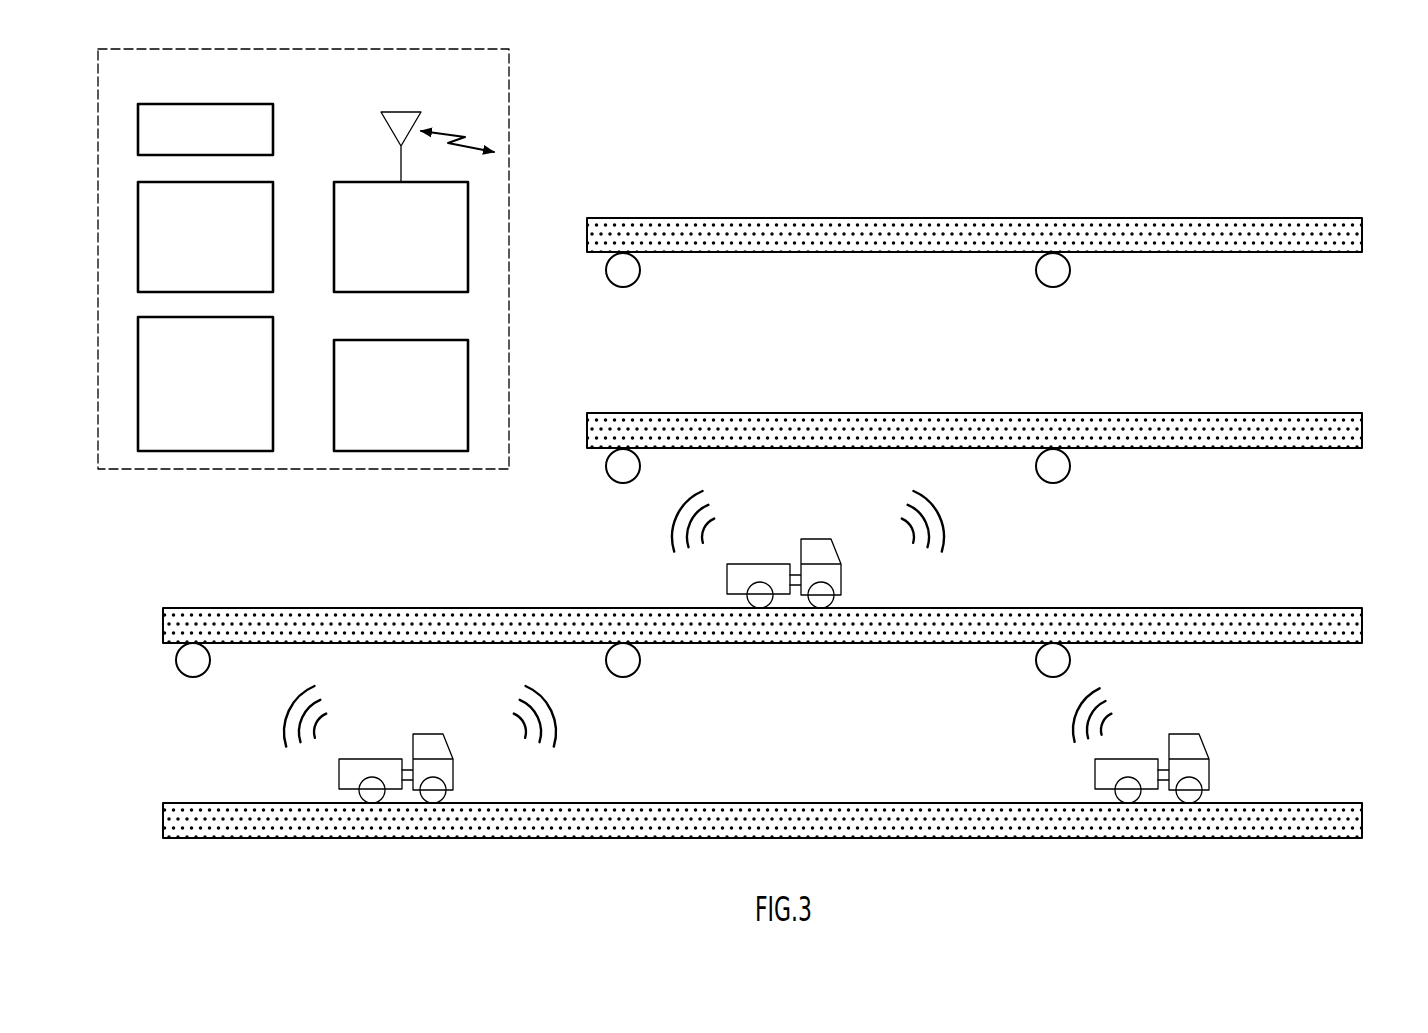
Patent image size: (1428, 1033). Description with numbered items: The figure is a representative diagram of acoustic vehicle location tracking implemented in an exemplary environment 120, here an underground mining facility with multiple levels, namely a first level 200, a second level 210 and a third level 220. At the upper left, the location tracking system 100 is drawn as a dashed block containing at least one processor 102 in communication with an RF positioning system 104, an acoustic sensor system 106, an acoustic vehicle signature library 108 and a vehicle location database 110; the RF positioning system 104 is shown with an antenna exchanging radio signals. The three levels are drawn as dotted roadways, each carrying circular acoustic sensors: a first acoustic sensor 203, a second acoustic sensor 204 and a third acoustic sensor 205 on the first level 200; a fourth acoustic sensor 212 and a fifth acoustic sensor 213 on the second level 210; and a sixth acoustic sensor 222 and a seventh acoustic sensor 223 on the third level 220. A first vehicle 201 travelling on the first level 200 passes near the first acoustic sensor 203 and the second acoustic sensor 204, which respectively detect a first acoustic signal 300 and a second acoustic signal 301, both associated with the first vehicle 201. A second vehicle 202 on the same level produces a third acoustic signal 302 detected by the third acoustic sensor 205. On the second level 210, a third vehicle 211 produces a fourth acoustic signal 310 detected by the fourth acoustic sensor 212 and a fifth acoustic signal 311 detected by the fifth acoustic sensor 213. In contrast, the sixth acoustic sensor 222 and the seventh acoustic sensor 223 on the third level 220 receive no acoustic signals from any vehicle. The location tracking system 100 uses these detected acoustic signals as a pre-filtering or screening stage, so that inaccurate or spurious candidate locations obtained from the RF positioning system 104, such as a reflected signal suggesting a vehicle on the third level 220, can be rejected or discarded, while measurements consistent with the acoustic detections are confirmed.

The location tracking system 100 is at (433, 49).
The processor 102 is at (273, 142).
The RF positioning system 104 is at (415, 292).
The acoustic sensor system 106 is at (273, 230).
The acoustic vehicle signature library 108 is at (273, 382).
The vehicle location database 110 is at (334, 412).
The environment 120 is at (1169, 129).
The first level 200 is at (1347, 750).
The first vehicle 201 is at (453, 777).
The second vehicle 202 is at (1210, 777).
The first acoustic sensor 203 is at (193, 677).
The second acoustic sensor 204 is at (623, 677).
The third acoustic sensor 205 is at (1053, 677).
The second level 210 is at (1347, 555).
The third vehicle 211 is at (843, 580).
The fourth acoustic sensor 212 is at (623, 483).
The fifth acoustic sensor 213 is at (1053, 483).
The third level 220 is at (1347, 360).
The sixth acoustic sensor 222 is at (623, 287).
The seventh acoustic sensor 223 is at (1053, 287).
The first acoustic signal 300 is at (277, 751).
The second acoustic signal 301 is at (557, 753).
The third acoustic signal 302 is at (1057, 753).
The fourth acoustic signal 310 is at (665, 558).
The fifth acoustic signal 311 is at (947, 556).